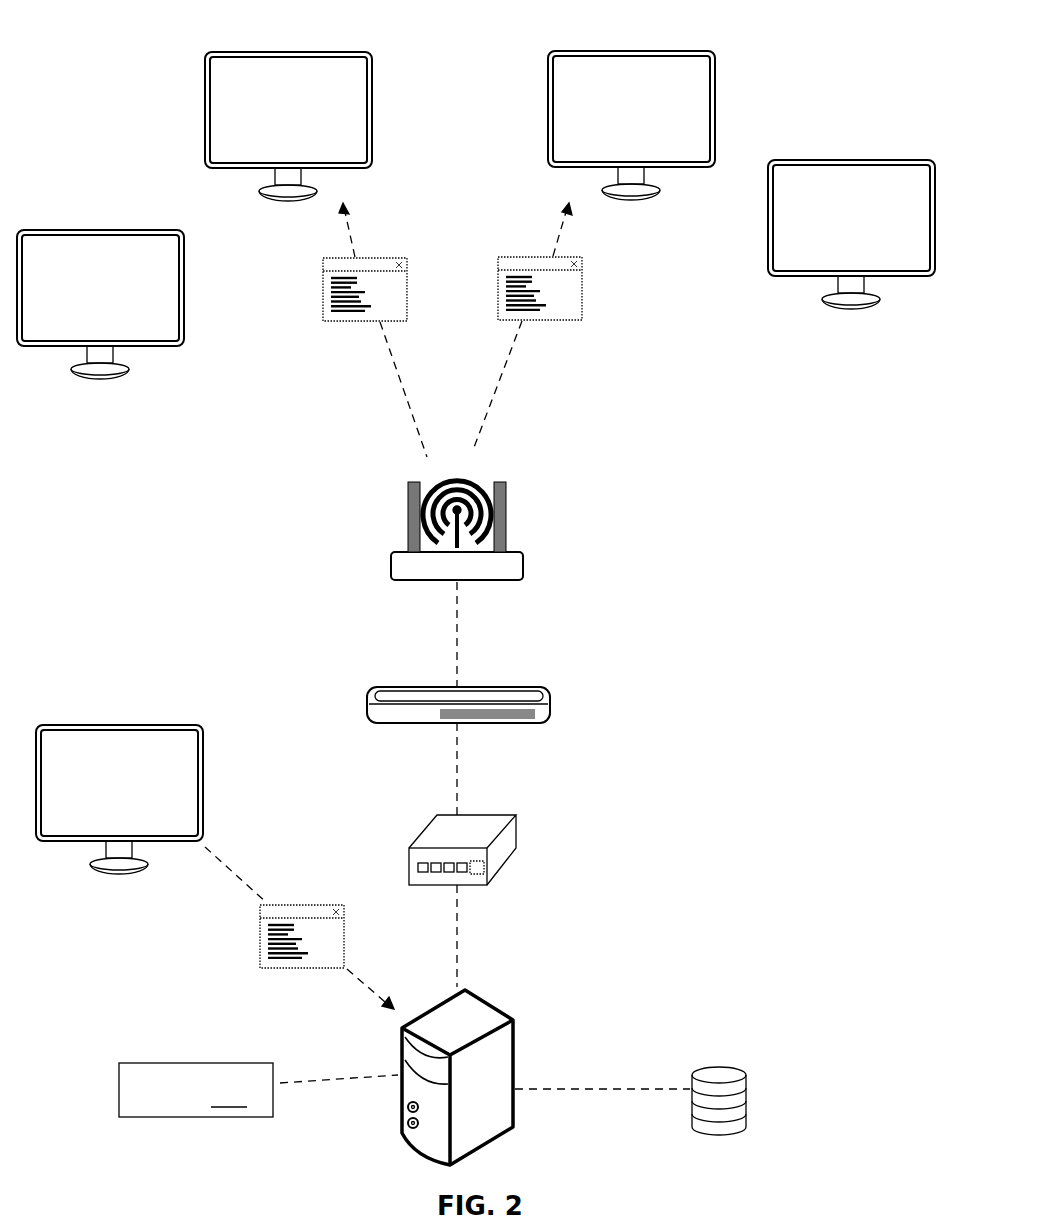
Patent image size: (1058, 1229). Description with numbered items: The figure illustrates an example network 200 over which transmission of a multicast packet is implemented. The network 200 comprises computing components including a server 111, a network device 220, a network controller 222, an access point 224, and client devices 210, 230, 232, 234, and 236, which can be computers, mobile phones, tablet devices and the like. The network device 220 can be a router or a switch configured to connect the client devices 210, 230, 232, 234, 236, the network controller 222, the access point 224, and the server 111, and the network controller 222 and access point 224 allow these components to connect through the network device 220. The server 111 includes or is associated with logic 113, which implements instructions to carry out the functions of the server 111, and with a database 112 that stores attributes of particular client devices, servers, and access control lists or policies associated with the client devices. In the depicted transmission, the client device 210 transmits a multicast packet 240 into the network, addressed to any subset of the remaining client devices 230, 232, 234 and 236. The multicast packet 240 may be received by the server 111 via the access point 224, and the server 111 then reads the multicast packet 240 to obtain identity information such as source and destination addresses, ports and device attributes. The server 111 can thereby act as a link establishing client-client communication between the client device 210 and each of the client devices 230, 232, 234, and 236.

The network 200 is at (80, 72).
The client device 210 is at (102, 792).
The network device 220 is at (516, 820).
The network controller 222 is at (553, 700).
The access point 224 is at (537, 527).
The client device 230 is at (83, 297).
The client device 232 is at (271, 119).
The client device 234 is at (614, 118).
The client device 236 is at (834, 227).
The multicast packet 240 is at (320, 290).
The server 111 is at (515, 1053).
The database 112 is at (747, 1092).
The logic 113 is at (196, 1090).